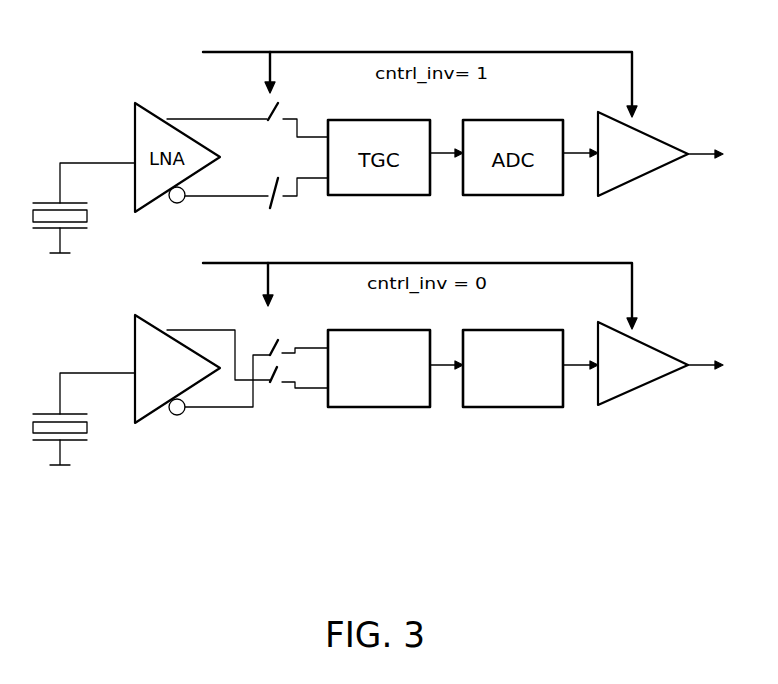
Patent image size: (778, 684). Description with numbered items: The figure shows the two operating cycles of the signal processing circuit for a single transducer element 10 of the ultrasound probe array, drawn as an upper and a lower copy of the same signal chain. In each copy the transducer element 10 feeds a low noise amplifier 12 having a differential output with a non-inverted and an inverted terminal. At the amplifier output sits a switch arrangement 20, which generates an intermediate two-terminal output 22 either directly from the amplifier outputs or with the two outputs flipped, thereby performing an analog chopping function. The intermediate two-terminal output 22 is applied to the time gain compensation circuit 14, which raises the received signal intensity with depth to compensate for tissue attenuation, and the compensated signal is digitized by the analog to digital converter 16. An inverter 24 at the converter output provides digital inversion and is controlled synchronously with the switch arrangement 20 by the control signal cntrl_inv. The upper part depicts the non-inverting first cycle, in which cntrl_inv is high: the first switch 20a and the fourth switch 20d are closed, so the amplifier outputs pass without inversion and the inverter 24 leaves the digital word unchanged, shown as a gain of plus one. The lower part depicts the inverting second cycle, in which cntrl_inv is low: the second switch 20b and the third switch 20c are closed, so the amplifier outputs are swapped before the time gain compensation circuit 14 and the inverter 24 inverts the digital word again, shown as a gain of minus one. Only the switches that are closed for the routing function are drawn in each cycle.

The transducer element 10 is at (87, 442).
The low noise amplifier 12 is at (142, 420).
The time gain compensation circuit 14 is at (397, 407).
The analog to digital converter 16 is at (533, 407).
The switch arrangement 20 is at (236, 399).
The first switch 20a is at (273, 114).
The second switch 20b is at (272, 383).
The third switch 20c is at (276, 338).
The fourth switch 20d is at (277, 180).
The intermediate two-terminal output 22 is at (313, 408).
The inverter 24 is at (667, 138).